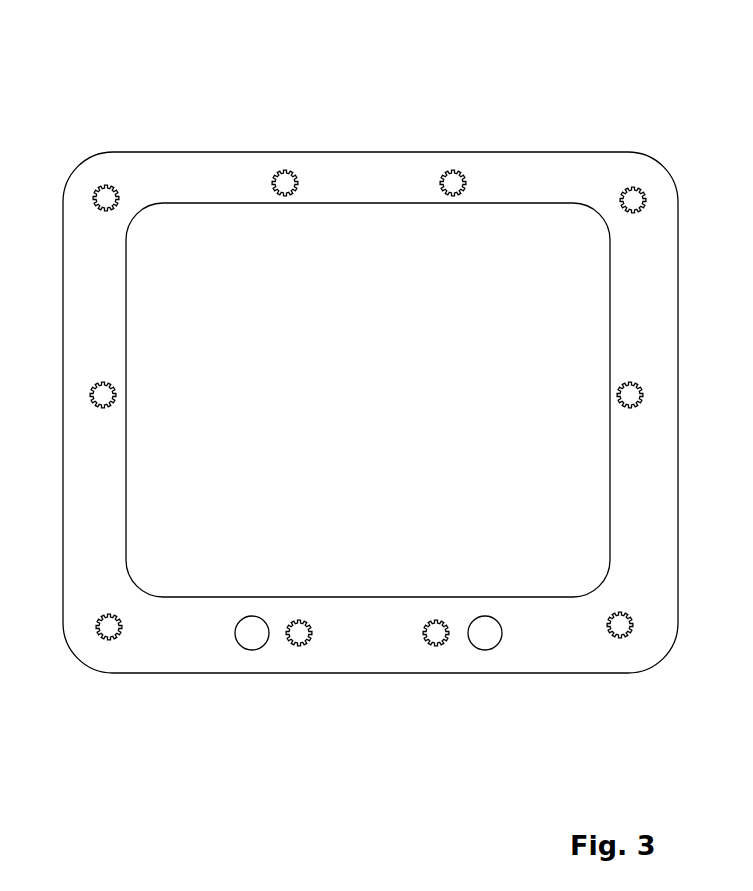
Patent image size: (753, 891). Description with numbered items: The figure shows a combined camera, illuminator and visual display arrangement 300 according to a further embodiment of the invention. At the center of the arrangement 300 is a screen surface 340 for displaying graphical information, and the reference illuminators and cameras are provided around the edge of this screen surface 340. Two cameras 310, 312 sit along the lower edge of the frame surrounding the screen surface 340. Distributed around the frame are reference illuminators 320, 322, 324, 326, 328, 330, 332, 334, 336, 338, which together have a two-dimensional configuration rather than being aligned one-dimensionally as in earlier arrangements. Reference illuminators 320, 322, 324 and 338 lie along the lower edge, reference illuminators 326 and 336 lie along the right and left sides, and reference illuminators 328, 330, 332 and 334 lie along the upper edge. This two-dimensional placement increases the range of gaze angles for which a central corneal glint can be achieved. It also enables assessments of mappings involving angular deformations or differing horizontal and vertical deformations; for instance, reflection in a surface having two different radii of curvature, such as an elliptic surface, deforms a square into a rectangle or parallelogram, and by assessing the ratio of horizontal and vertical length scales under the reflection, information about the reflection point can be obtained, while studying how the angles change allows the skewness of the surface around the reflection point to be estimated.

The combined camera, illuminator and visual display arrangement 300 is at (124, 90).
The camera 310 is at (252, 650).
The camera 312 is at (502, 633).
The reference illuminator 320 is at (299, 646).
The reference illuminator 322 is at (436, 646).
The reference illuminator 324 is at (620, 638).
The reference illuminator 326 is at (643, 398).
The reference illuminator 328 is at (633, 187).
The reference illuminator 330 is at (453, 170).
The reference illuminator 332 is at (285, 170).
The reference illuminator 334 is at (105, 185).
The reference illuminator 336 is at (92, 398).
The reference illuminator 338 is at (109, 640).
The screen surface 340 is at (370, 203).